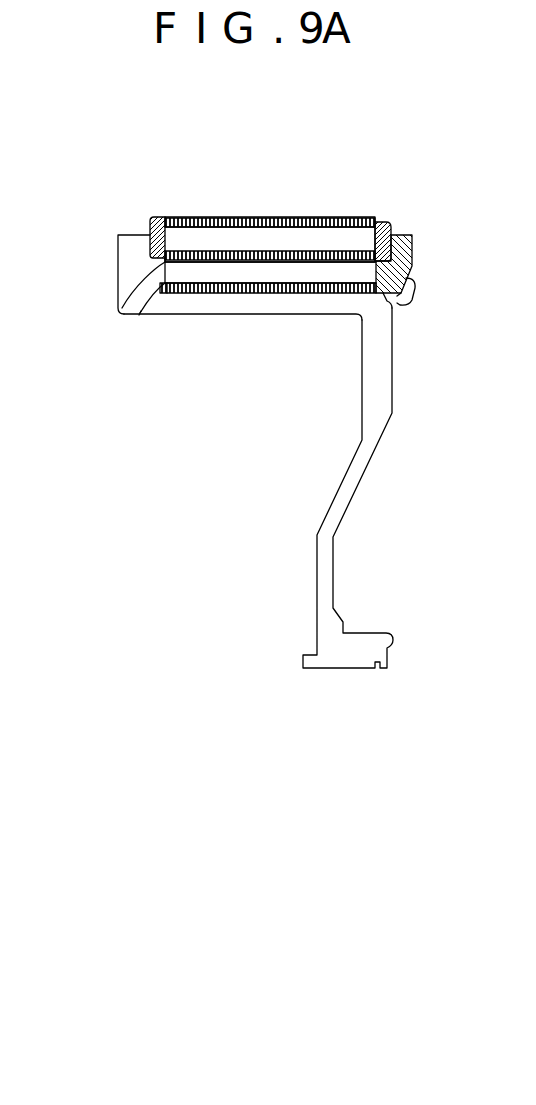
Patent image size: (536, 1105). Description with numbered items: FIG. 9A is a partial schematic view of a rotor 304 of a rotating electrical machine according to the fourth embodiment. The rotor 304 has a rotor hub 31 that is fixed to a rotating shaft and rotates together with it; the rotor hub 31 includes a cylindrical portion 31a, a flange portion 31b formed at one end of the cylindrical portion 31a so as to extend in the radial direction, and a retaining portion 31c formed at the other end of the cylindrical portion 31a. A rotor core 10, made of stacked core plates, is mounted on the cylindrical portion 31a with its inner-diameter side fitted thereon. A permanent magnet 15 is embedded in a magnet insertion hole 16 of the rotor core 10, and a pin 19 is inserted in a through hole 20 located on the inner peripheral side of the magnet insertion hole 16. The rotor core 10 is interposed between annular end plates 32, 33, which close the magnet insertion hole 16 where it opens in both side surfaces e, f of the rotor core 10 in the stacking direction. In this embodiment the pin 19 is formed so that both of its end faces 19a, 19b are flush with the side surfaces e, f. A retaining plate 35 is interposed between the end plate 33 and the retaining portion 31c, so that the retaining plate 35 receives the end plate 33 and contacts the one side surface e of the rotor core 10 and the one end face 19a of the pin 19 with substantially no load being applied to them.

The rotor 304 is at (313, 106).
The rotor core 10 is at (272, 218).
The permanent magnet 15 is at (237, 233).
The magnet insertion hole 16 is at (190, 228).
The pin 19 is at (255, 270).
The one end face of the pin 19a is at (413, 270).
The other end face of the pin 19b is at (123, 312).
The through hole 20 is at (203, 282).
The rotor hub 31 is at (380, 398).
The cylindrical portion 31a is at (305, 303).
The flange portion 31b is at (126, 283).
The retaining portion 31c is at (415, 287).
The end plate 32 is at (155, 217).
The end plate 33 is at (385, 222).
The retaining plate 35 is at (412, 242).
The one side surface e is at (394, 304).
The other side surface f is at (136, 325).